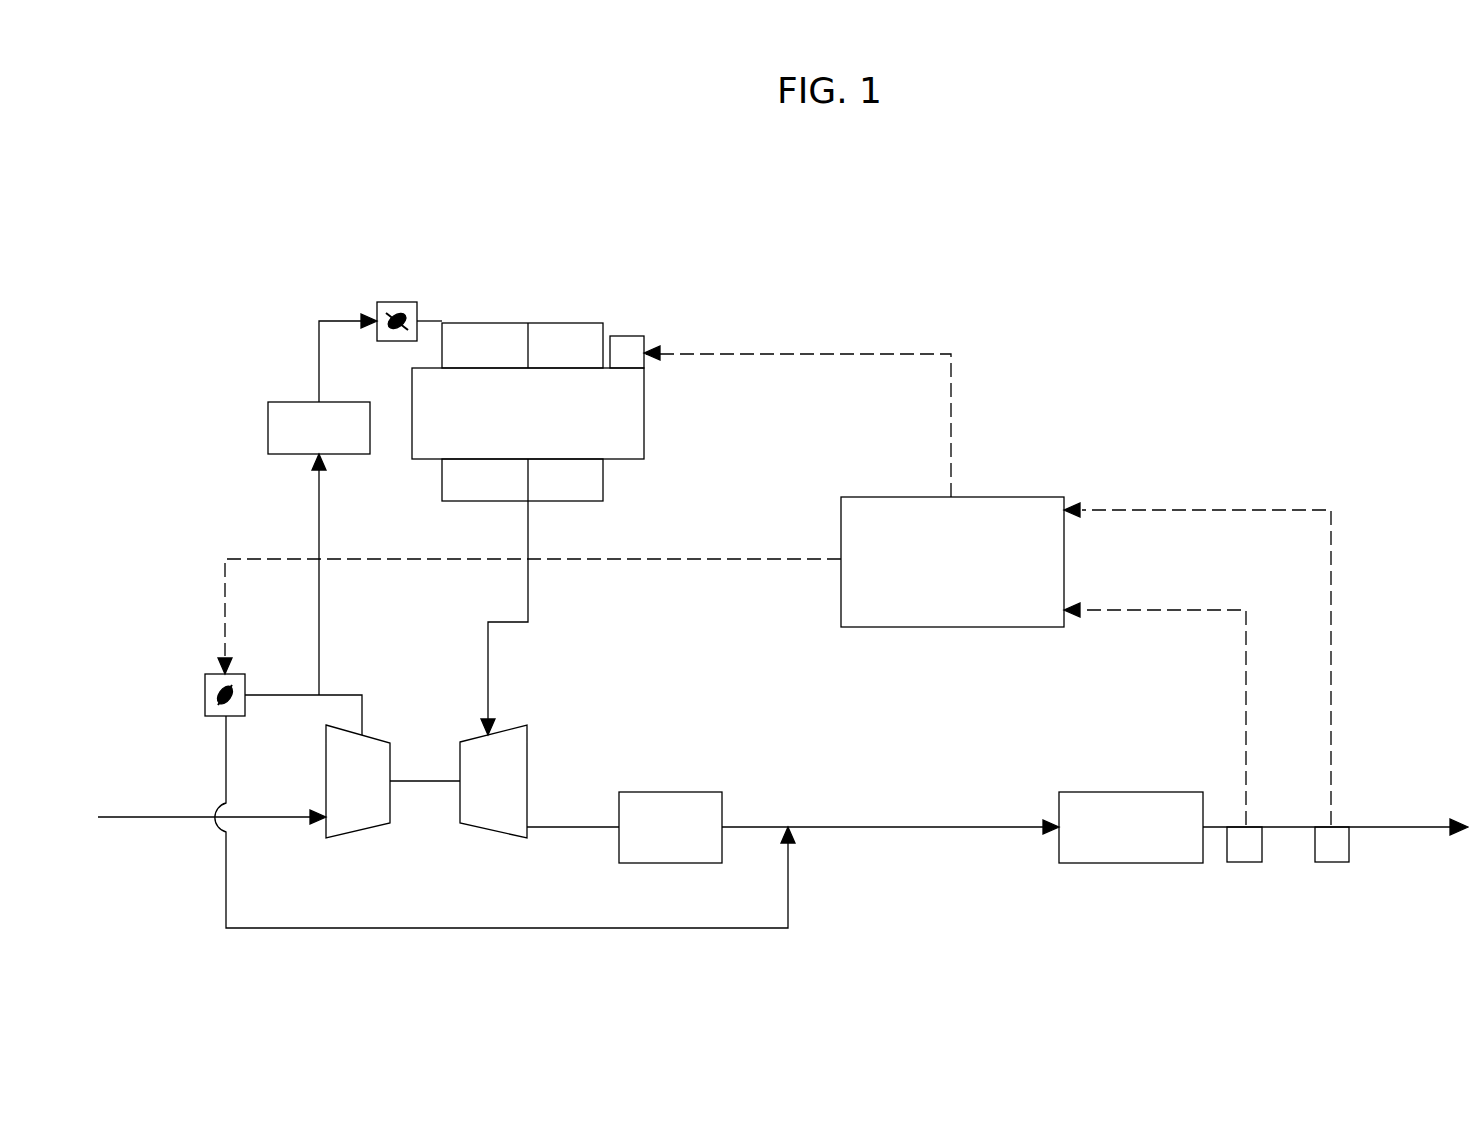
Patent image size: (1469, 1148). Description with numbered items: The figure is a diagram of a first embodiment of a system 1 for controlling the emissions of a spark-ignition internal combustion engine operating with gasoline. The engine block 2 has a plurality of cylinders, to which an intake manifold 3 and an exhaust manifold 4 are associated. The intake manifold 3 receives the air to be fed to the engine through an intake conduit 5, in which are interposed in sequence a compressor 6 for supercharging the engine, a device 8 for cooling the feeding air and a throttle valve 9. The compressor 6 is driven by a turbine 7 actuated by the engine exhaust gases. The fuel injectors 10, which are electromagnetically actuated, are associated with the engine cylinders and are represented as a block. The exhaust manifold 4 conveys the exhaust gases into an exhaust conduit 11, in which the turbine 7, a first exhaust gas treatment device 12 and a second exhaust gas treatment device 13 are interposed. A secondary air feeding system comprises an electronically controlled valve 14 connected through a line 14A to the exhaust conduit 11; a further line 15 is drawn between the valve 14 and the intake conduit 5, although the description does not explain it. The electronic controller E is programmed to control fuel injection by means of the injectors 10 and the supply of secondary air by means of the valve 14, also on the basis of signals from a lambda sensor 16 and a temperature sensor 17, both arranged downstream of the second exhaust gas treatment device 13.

The system for controlling emissions 1 is at (1250, 328).
The engine block 2 is at (650, 410).
The intake manifold 3 is at (562, 314).
The exhaust manifold 4 is at (578, 506).
The intake conduit 5 is at (325, 617).
The compressor 6 is at (360, 825).
The turbine 7 is at (513, 773).
The device for cooling the feeding air 8 is at (280, 455).
The throttle valve 9 is at (393, 301).
The fuel injectors 10 is at (633, 347).
The exhaust conduit 11 is at (536, 601).
The first exhaust gas treatment device 12 is at (673, 798).
The second exhaust gas treatment device 13 is at (1140, 803).
The electronically controlled valve 14 is at (197, 694).
The line 14A is at (230, 738).
The supply line 15 is at (282, 695).
The lambda sensor 16 is at (1245, 853).
The sensor for sensing exhaust gas temperature 17 is at (1331, 853).
The electronic controller E is at (897, 615).